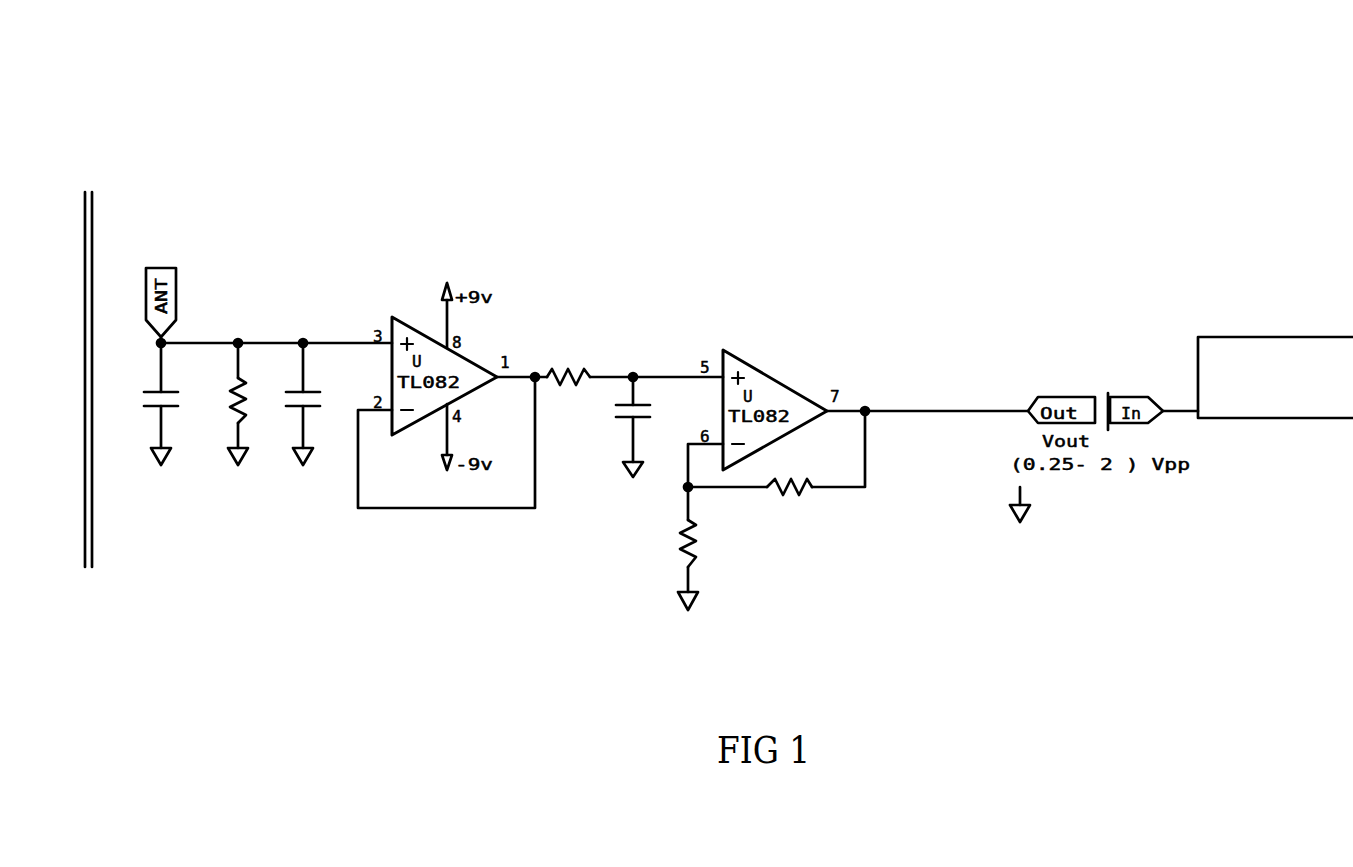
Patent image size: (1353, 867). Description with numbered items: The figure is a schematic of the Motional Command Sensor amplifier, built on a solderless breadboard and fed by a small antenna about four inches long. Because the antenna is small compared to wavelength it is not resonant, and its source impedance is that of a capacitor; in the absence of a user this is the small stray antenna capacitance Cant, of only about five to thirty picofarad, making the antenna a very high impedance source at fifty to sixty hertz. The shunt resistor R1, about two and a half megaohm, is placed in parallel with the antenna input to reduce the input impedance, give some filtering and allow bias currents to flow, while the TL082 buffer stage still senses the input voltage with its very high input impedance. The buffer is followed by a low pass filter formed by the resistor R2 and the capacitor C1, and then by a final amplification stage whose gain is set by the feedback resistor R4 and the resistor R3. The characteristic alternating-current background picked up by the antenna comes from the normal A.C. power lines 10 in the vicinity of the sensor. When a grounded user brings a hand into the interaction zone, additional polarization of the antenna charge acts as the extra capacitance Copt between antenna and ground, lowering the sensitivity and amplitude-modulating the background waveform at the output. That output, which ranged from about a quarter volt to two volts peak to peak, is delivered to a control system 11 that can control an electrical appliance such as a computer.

The A.C. power lines 10 is at (85, 238).
The control system 11 is at (1276, 337).
The shunt resistor R1 is at (227, 404).
The resistor R2 is at (561, 381).
The resistor R3 is at (692, 548).
The resistor R4 is at (788, 494).
The capacitor C1 is at (633, 432).
The antenna capacitance Cant is at (145, 404).
The user capacitance Copt is at (314, 404).